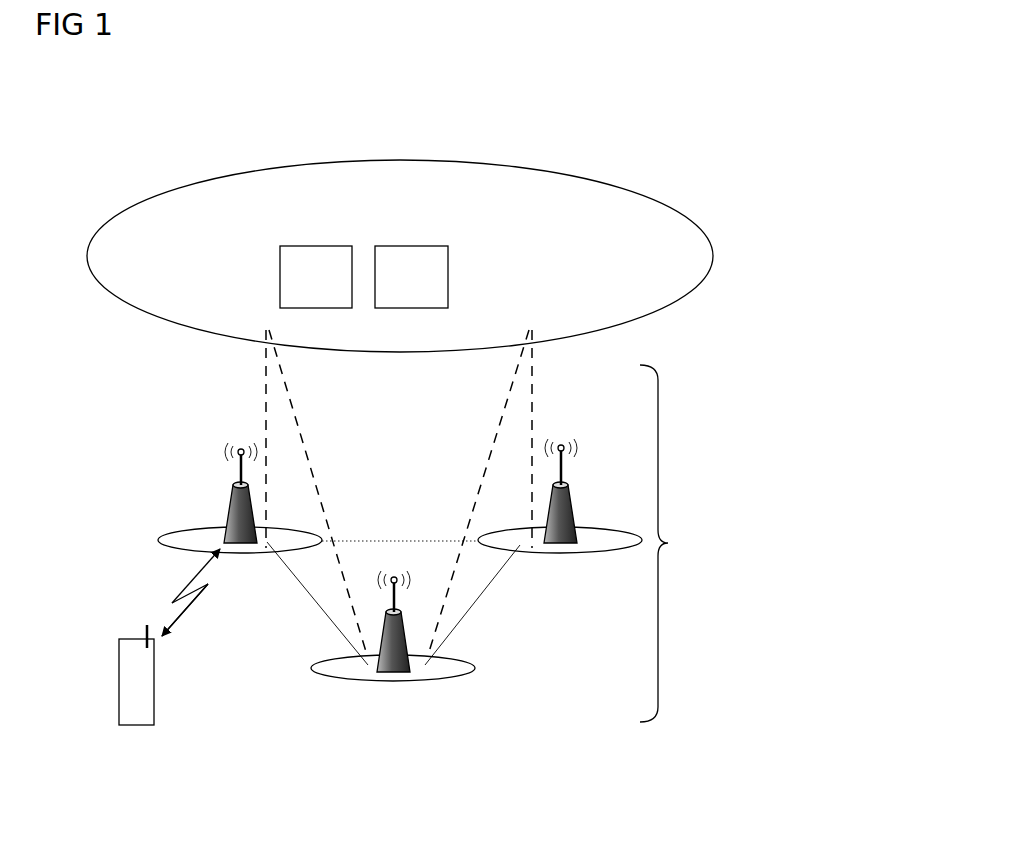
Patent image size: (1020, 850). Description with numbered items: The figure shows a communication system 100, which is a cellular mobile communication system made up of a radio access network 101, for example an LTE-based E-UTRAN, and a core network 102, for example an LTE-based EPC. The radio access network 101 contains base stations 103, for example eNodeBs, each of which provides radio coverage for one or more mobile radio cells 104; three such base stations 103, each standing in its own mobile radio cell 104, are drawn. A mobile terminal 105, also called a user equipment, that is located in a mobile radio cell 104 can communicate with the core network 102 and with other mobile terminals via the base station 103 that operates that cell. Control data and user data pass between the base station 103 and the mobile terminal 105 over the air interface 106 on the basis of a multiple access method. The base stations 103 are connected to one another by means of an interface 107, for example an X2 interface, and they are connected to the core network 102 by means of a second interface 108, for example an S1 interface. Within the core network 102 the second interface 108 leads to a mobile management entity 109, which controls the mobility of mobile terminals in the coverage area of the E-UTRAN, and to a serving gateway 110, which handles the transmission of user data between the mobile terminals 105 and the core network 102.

The communication system 100 is at (690, 98).
The radio access network 101 is at (750, 522).
The core network 102 is at (703, 233).
The base station 103 is at (232, 492).
The mobile radio cell 104 is at (170, 540).
The mobile terminal 105 is at (136, 727).
The air interface 106 is at (207, 604).
The interface 107 is at (395, 516).
The second interface 108 is at (266, 386).
The mobile management entity 109 is at (317, 246).
The serving gateway 110 is at (420, 246).